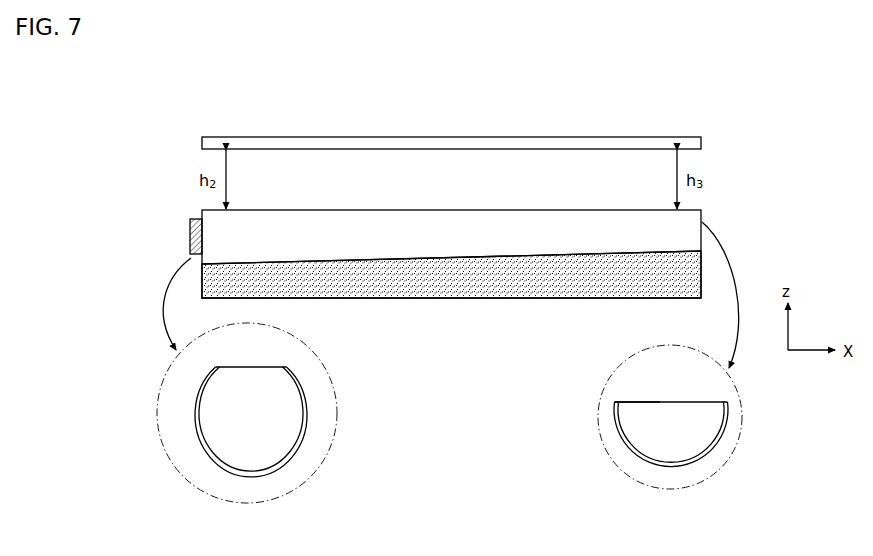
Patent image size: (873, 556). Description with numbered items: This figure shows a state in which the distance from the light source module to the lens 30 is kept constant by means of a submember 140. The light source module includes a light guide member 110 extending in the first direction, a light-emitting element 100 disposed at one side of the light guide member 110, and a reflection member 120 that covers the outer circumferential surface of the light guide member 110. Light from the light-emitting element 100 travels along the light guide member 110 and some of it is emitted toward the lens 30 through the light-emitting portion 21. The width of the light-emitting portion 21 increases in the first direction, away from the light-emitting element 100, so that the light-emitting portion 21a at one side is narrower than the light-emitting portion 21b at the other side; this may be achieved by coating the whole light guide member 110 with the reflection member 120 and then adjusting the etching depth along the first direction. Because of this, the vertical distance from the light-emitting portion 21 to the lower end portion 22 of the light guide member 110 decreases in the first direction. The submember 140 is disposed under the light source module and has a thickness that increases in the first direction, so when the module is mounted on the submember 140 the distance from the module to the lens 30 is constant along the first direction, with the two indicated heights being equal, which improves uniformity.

The lens 30 is at (640, 141).
The light-emitting portion 21 is at (585, 209).
The lower end portion 22 is at (425, 258).
The submember 140 is at (508, 282).
The light-emitting element 100 is at (186, 232).
The light-emitting portion at one side 21a is at (272, 366).
The light-emitting portion at the other side 21b is at (635, 401).
The reflection member 120 is at (308, 395).
The light guide member 110 is at (275, 437).